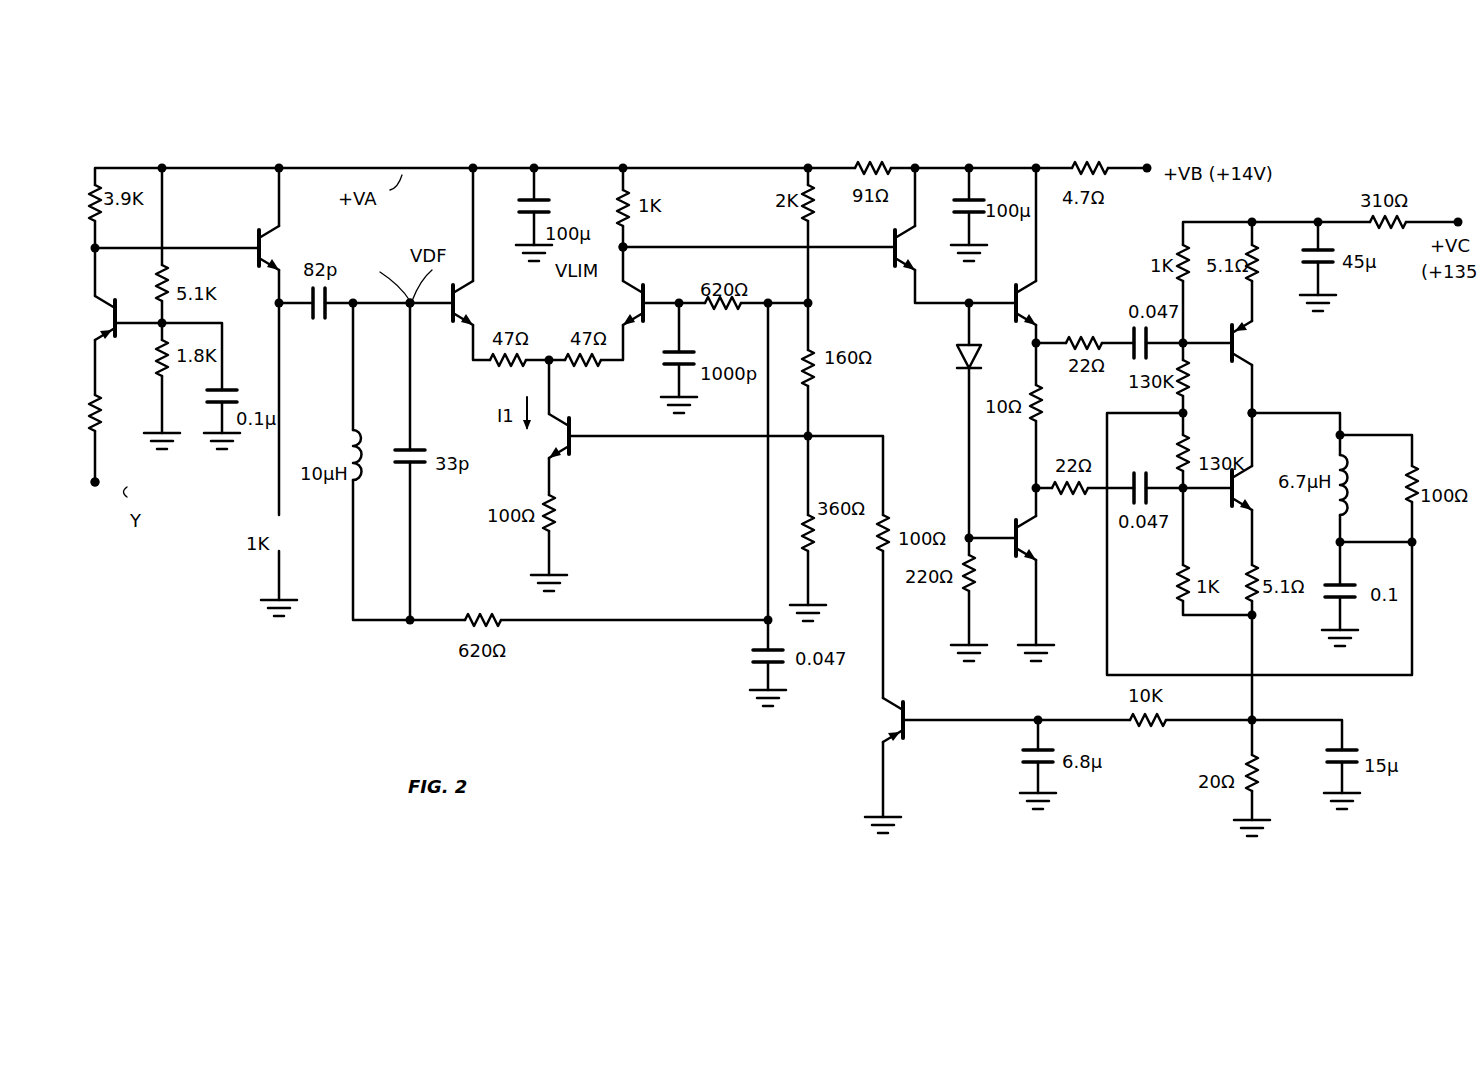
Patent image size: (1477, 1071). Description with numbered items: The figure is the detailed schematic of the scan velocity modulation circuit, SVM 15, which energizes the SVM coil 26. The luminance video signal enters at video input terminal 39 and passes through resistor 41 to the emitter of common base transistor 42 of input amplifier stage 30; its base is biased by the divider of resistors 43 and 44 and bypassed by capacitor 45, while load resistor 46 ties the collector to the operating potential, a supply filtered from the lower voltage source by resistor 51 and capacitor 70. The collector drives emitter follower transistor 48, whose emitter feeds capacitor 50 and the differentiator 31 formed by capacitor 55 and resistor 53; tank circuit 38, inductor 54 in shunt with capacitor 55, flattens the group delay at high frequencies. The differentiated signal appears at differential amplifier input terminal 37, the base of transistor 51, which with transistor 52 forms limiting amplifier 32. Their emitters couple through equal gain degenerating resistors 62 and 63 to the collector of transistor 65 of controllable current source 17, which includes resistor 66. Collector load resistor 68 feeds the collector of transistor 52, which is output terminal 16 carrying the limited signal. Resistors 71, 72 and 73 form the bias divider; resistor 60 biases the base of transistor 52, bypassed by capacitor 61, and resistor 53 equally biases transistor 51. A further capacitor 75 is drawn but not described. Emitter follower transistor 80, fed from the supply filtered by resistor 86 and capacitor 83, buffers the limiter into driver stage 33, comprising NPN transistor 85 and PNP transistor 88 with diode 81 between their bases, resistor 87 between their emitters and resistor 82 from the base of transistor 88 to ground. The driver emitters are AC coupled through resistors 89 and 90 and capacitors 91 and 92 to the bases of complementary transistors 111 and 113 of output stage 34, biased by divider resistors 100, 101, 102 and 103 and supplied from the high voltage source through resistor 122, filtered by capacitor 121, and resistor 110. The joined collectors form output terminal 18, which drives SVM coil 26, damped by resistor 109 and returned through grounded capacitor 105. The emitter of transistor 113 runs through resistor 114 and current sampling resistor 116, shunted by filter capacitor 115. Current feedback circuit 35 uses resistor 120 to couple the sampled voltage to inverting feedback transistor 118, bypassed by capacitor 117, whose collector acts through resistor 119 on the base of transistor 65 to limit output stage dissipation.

The scan velocity modulation circuit 15 is at (489, 706).
The output terminal 16 is at (627, 250).
The controllable constant current source 17 is at (631, 475).
The output terminal 18 is at (1256, 412).
The scan velocity modulation coil 26 is at (1346, 492).
The input amplifier stage 30 is at (214, 208).
The differentiator circuit 31 is at (425, 470).
The limiting amplifier 32 is at (551, 306).
The driver stage 33 is at (996, 490).
The output power amplifier stage 34 is at (1364, 366).
The current feedback circuit 35 is at (1159, 805).
The differential amplifier input terminal 37 is at (392, 283).
The tank circuit 38 is at (383, 546).
The video input terminal 39 is at (95, 485).
The resistor 41 is at (101, 412).
The transistor 42 is at (106, 303).
The resistor 43 is at (166, 272).
The resistor 44 is at (158, 363).
The bypass capacitor 45 is at (228, 388).
The load resistor 46 is at (101, 203).
The transistor 48 is at (264, 240).
The capacitor 50 is at (316, 322).
The transistor 51 is at (462, 318).
The transistor 52 is at (642, 290).
The resistor 53 is at (478, 615).
The inductor 54 is at (352, 446).
The capacitor 55 is at (405, 447).
The resistor 60 is at (722, 318).
The capacitor 61 is at (664, 366).
The gain degenerating resistor 62 is at (492, 372).
The gain degenerating resistor 63 is at (588, 372).
The transistor 65 is at (560, 452).
The resistor 66 is at (556, 510).
The collector load resistor 68 is at (618, 208).
The capacitor 70 is at (519, 212).
The resistor 71 is at (815, 203).
The resistor 72 is at (816, 382).
The resistor 73 is at (816, 545).
The capacitor 0.047 75 is at (752, 657).
The emitter follower transistor 80 is at (905, 265).
The diode 81 is at (957, 357).
The resistor 82 is at (976, 578).
The capacitor 83 is at (962, 203).
The NPN transistor 85 is at (1028, 292).
The resistor 86 is at (1082, 165).
The resistor 87 is at (1042, 397).
The PNP transistor 88 is at (1026, 545).
The resistor 89 is at (1082, 340).
The resistor 90 is at (1075, 496).
The capacitor 91 is at (1130, 338).
The capacitor 92 is at (1135, 470).
The resistor 100 is at (1180, 255).
The resistor 101 is at (1190, 381).
The resistor 102 is at (1190, 450).
The resistor 103 is at (1180, 588).
The grounded capacitor 105 is at (1322, 612).
The damping resistor 109 is at (1404, 498).
The resistor 110 is at (1258, 268).
The transistor 111 is at (1245, 345).
The transistor 113 is at (1246, 500).
The resistor 114 is at (1246, 577).
The filter capacitor 115 is at (1348, 750).
The current sampling resistor 116 is at (1258, 772).
The bypass capacitor 117 is at (1020, 751).
The inverting feedback transistor 118 is at (895, 730).
The resistor 119 is at (886, 525).
The resistor 120 is at (1143, 730).
The DC supply filter capacitor 121 is at (1303, 266).
The resistor 122 is at (1397, 237).